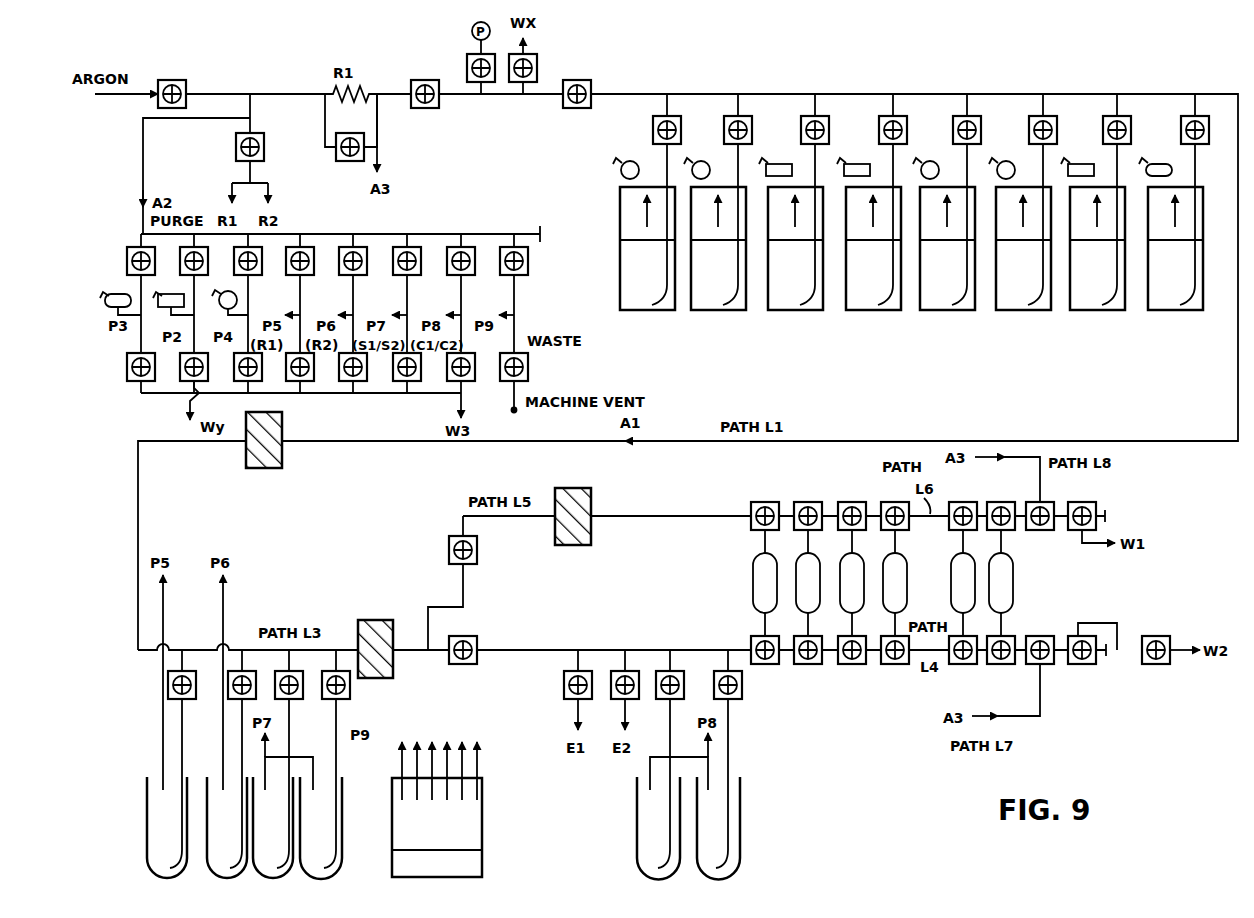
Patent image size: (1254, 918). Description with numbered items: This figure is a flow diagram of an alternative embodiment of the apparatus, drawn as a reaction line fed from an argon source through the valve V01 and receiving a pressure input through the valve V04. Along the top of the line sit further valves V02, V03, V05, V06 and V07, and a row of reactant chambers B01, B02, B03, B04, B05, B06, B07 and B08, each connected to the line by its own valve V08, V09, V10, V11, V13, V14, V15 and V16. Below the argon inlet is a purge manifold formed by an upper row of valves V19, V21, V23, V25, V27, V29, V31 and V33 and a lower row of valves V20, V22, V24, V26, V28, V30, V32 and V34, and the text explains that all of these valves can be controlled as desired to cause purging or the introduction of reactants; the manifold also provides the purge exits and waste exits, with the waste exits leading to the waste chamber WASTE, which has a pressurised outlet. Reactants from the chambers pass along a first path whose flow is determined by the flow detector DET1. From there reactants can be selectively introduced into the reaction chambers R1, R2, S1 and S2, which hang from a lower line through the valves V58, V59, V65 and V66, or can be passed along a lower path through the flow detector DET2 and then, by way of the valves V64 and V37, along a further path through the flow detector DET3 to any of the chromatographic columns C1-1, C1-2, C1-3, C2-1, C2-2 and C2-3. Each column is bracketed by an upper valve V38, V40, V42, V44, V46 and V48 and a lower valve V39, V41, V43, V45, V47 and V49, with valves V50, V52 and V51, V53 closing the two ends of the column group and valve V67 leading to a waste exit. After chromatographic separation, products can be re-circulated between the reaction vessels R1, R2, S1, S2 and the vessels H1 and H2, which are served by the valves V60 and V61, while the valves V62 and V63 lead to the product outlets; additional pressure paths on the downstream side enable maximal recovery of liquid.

The valve V01 is at (174, 85).
The valve V02 is at (348, 138).
The valve V03 is at (425, 105).
The valve V04 is at (461, 66).
The valve V05 is at (541, 66).
The valve V06 is at (577, 105).
The valve V07 is at (224, 147).
The valve V08 is at (683, 130).
The valve V09 is at (754, 130).
The valve V10 is at (831, 130).
The valve V11 is at (909, 130).
The valve V13 is at (983, 130).
The valve V14 is at (1059, 130).
The valve V15 is at (1133, 130).
The valve V16 is at (1211, 130).
The reactant chamber B01 is at (1171, 236).
The reactant chamber B02 is at (791, 236).
The reactant chamber B03 is at (1020, 236).
The reactant chamber B04 is at (944, 236).
The reactant chamber B05 is at (869, 236).
The reactant chamber B06 is at (1093, 236).
The reactant chamber B07 is at (715, 236).
The reactant chamber B08 is at (644, 236).
The valve V19 is at (153, 267).
The valve V20 is at (133, 383).
The valve V21 is at (206, 267).
The valve V22 is at (179, 355).
The valve V23 is at (260, 267).
The valve V24 is at (245, 383).
The valve V25 is at (312, 267).
The valve V26 is at (298, 383).
The valve V27 is at (365, 267).
The valve V28 is at (354, 383).
The valve V29 is at (419, 267).
The valve V30 is at (409, 383).
The valve V31 is at (473, 267).
The valve V32 is at (471, 378).
The valve V33 is at (526, 267).
The valve V34 is at (530, 367).
The flow detector DET1 is at (261, 453).
The flow detector DET2 is at (370, 638).
The flow detector DET3 is at (572, 506).
The valve V37 is at (447, 550).
The valve V64 is at (467, 641).
The column valve V38 is at (762, 507).
The column valve V39 is at (762, 657).
The column valve V40 is at (807, 507).
The column valve V41 is at (808, 657).
The column valve V42 is at (851, 507).
The column valve V43 is at (851, 657).
The column valve V44 is at (892, 507).
The column valve V45 is at (893, 657).
The column valve V46 is at (961, 507).
The column valve V47 is at (961, 657).
The column valve V48 is at (1000, 507).
The column valve V49 is at (1000, 657).
The valve V50 is at (1042, 527).
The valve V51 is at (1041, 641).
The valve V52 is at (1091, 507).
The valve V53 is at (1079, 658).
The waste valve V67 is at (1155, 658).
The chromatographic column C1-1 is at (755, 592).
The chromatographic column C1-2 is at (800, 596).
The chromatographic column C1-3 is at (844, 596).
The chromatographic column C2-1 is at (883, 578).
The chromatographic column C2-2 is at (951, 596).
The chromatographic column C2-3 is at (1013, 596).
The valve V58 is at (196, 681).
The valve V59 is at (253, 681).
The valve V65 is at (299, 681).
The valve V66 is at (347, 693).
The valve V60 is at (664, 695).
The valve V61 is at (718, 695).
The valve V62 is at (569, 695).
The valve V63 is at (618, 695).
The reaction chamber R1 is at (167, 788).
The reaction chamber R2 is at (227, 788).
The reaction chamber S1 is at (273, 788).
The reaction chamber S2 is at (321, 789).
The reaction vessel H1 is at (658, 789).
The reaction vessel H2 is at (718, 789).
The waste chamber WASTE is at (458, 794).